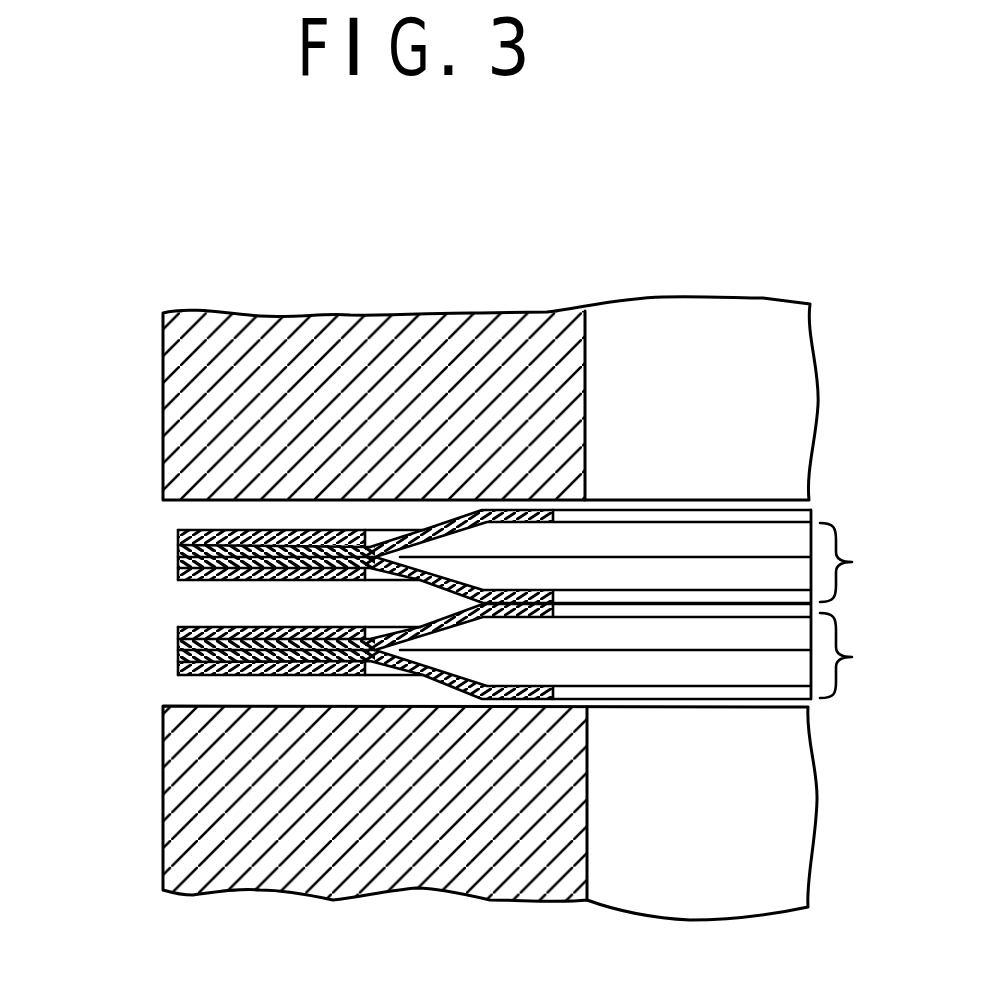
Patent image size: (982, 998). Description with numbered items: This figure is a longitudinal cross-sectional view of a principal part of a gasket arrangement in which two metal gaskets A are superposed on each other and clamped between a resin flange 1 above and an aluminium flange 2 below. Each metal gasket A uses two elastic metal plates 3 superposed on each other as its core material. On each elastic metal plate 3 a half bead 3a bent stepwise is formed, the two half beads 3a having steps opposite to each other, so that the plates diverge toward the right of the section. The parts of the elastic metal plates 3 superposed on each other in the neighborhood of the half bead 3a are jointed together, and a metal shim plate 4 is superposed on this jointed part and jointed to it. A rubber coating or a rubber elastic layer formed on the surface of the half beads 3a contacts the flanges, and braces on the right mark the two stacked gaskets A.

The resin flange 1 is at (232, 335).
The aluminium flange 2 is at (247, 850).
The elastic metal plate 3 is at (183, 562).
The half bead 3a is at (472, 700).
The metal shim plate 4 is at (183, 530).
The metal gasket A is at (851, 610).